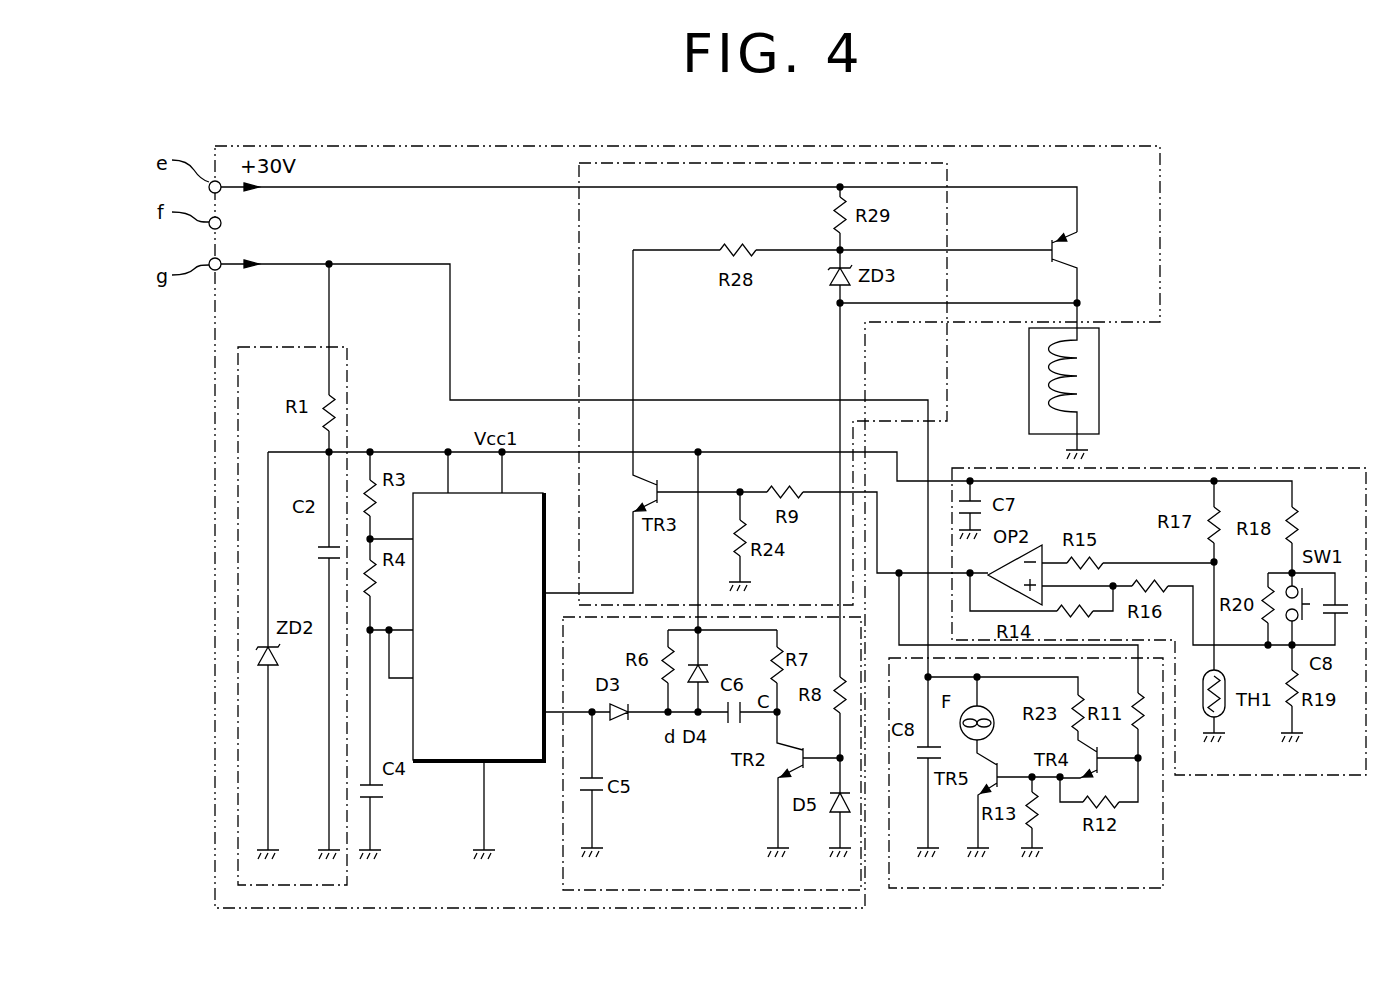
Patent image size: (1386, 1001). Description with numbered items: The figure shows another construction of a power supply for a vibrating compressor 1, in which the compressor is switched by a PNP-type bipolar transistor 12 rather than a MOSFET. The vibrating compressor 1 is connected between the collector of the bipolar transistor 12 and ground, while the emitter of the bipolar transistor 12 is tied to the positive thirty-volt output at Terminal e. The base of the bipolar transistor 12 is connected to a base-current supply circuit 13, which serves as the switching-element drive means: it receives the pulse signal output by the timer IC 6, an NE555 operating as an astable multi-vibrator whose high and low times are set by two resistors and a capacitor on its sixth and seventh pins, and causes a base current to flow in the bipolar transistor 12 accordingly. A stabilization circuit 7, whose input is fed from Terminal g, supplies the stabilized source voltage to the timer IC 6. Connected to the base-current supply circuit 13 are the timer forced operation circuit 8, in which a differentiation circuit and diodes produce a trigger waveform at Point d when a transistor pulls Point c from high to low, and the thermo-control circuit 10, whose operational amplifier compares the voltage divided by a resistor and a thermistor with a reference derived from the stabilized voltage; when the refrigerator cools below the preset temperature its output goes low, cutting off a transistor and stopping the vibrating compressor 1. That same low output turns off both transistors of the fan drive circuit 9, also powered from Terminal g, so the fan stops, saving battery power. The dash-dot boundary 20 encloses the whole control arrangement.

The vibrating compressor 1 is at (1029, 380).
The timer IC 6 is at (540, 492).
The stabilization circuit 7 is at (283, 347).
The timer forced operation circuit 8 is at (563, 866).
The fan drive circuit 9 is at (1163, 862).
The thermo-control circuit 10 is at (1312, 775).
The bipolar transistor 12 is at (1070, 257).
The base-current supply circuit 13 is at (579, 213).
The control circuit 20 is at (1160, 160).